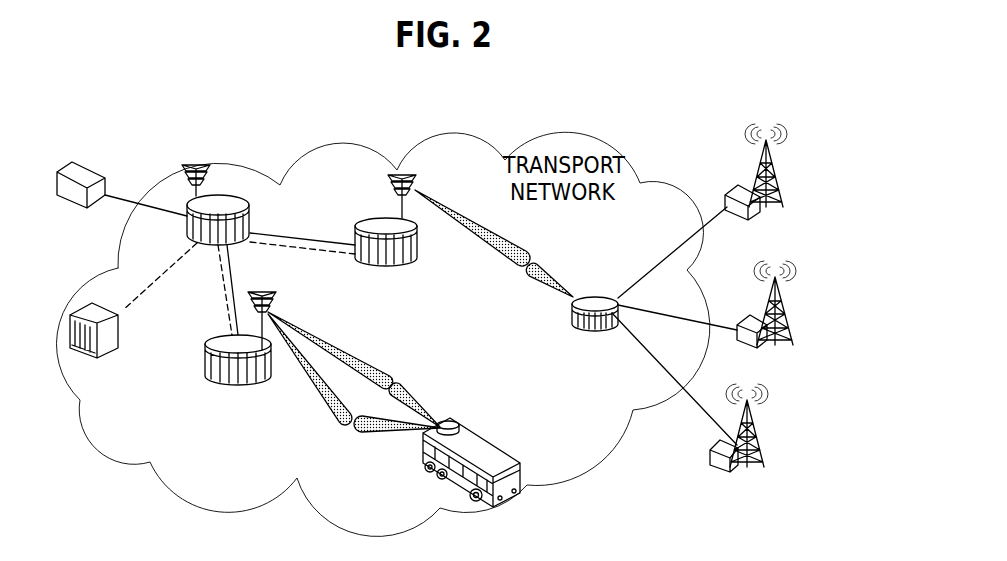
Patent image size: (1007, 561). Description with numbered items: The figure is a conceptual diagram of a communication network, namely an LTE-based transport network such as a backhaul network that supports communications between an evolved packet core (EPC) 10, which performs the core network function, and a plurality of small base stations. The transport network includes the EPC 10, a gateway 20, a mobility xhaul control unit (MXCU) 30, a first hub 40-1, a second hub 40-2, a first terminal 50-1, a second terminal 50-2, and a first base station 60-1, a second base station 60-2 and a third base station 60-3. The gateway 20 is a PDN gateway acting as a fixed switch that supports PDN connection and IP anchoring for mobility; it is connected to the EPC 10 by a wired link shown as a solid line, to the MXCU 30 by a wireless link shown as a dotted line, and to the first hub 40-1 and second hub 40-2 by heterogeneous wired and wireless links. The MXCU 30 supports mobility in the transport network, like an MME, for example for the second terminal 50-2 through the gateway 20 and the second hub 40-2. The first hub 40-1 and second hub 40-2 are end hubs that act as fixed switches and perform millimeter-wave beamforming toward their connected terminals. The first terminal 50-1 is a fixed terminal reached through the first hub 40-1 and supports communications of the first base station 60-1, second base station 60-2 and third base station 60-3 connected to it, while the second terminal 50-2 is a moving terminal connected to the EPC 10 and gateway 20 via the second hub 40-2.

The evolved packet core (EPC) 10 is at (72, 158).
The gateway 20 is at (193, 164).
The mobility xhaul control unit (MXCU) 30 is at (72, 313).
The first hub 40-1 is at (416, 174).
The second hub 40-2 is at (206, 344).
The first terminal 50-1 is at (592, 298).
The second terminal 50-2 is at (486, 437).
The first base station 60-1 is at (775, 178).
The second base station 60-2 is at (787, 310).
The third base station 60-3 is at (760, 433).